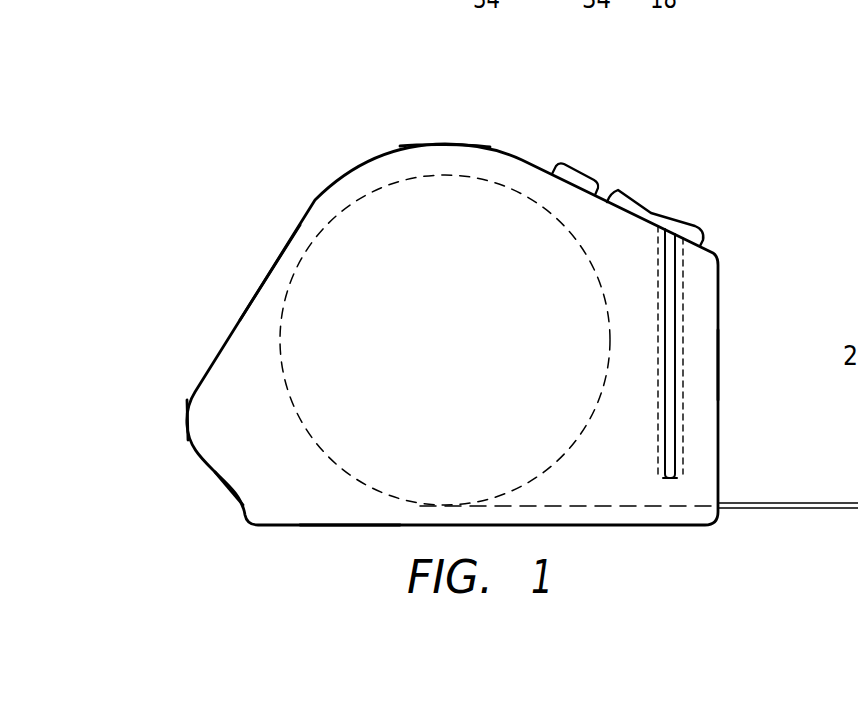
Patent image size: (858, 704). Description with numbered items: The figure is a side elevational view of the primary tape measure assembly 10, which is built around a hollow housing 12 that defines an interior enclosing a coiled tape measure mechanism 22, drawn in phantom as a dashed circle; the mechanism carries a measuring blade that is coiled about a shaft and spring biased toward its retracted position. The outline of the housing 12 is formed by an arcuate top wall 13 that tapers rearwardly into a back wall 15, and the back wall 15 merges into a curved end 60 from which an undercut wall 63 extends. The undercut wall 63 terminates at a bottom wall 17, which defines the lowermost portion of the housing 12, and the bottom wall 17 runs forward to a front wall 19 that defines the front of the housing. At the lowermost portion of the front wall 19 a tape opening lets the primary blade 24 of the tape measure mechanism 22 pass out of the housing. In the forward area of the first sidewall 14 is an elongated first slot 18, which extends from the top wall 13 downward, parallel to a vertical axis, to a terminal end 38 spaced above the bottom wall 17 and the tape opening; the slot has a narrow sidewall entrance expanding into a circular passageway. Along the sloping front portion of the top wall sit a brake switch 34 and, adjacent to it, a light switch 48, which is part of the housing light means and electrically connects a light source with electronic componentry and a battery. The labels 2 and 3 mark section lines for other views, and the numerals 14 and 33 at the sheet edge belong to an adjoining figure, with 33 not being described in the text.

The primary tape measure assembly 10 is at (622, 114).
The hollow housing 12 is at (377, 159).
The arcuate top wall 13 is at (438, 145).
The back wall 15 is at (235, 313).
The bottom wall 17 is at (337, 526).
The first slot 18 is at (673, 302).
The front wall 19 is at (720, 362).
The coiled tape measure mechanism 22 is at (324, 234).
The primary blade 24 is at (820, 501).
The brake switch 34 is at (692, 225).
The terminal end 38 is at (670, 474).
The light switch 48 is at (582, 178).
The curved end 60 is at (187, 418).
The undercut wall 63 is at (243, 499).
The section line 2- 2 is at (753, 500).
The section line 3- 3 is at (318, 145).
The first sidewall 14 is at (239, 6).
The housing part 33 is at (433, 7).